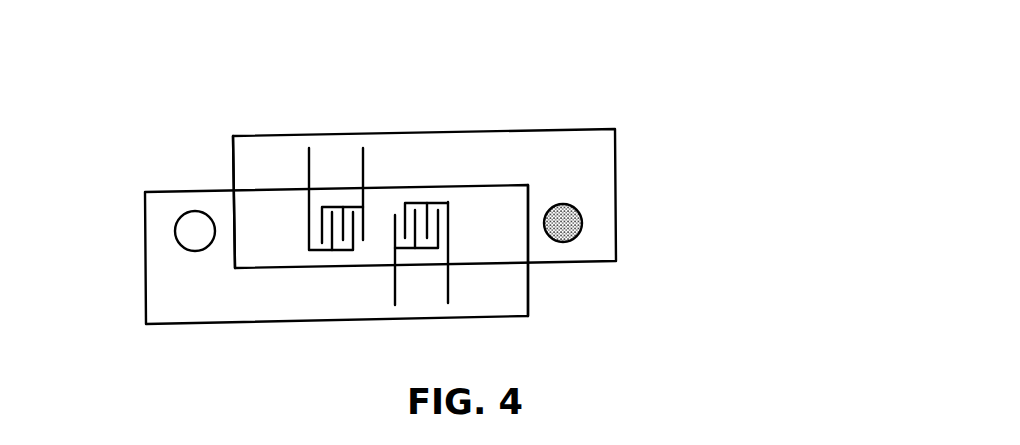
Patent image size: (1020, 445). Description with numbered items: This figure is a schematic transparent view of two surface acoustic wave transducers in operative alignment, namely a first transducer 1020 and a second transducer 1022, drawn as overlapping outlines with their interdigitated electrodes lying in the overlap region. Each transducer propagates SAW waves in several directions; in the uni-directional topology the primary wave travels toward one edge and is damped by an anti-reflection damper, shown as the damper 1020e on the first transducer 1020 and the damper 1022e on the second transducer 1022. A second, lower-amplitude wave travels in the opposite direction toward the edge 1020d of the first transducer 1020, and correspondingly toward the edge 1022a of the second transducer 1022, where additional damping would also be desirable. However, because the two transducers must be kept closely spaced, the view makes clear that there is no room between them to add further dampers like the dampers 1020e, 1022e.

The transducer 1020 is at (527, 135).
The edge 1020d is at (228, 162).
The anti-reflection damper 1020e is at (575, 220).
The transducer 1022 is at (250, 315).
The edge 1022a is at (527, 295).
The anti-reflection damper 1022e is at (197, 228).